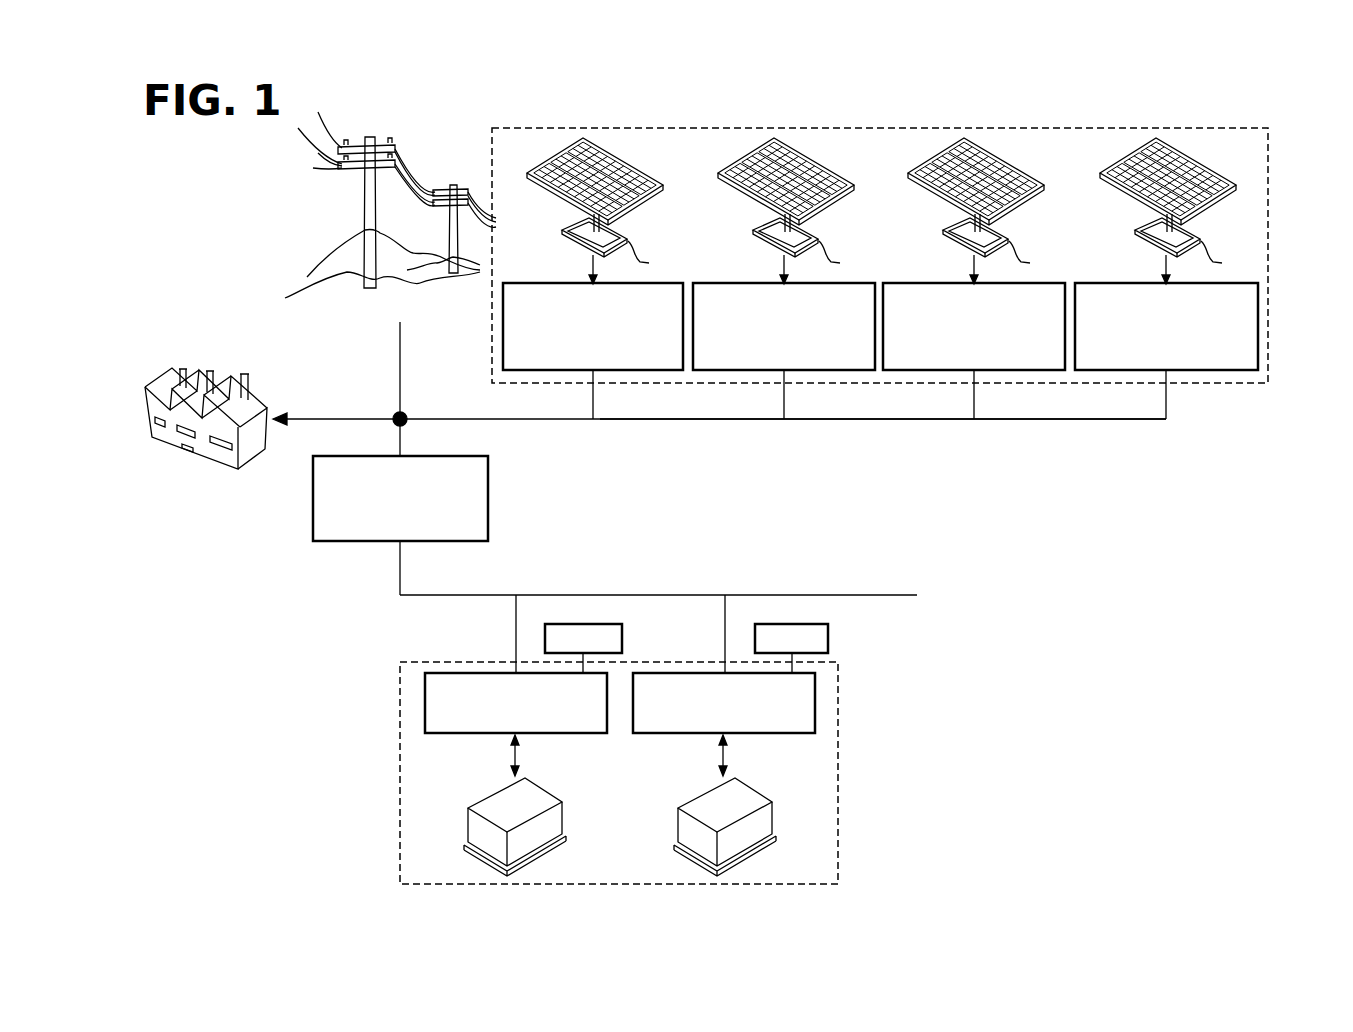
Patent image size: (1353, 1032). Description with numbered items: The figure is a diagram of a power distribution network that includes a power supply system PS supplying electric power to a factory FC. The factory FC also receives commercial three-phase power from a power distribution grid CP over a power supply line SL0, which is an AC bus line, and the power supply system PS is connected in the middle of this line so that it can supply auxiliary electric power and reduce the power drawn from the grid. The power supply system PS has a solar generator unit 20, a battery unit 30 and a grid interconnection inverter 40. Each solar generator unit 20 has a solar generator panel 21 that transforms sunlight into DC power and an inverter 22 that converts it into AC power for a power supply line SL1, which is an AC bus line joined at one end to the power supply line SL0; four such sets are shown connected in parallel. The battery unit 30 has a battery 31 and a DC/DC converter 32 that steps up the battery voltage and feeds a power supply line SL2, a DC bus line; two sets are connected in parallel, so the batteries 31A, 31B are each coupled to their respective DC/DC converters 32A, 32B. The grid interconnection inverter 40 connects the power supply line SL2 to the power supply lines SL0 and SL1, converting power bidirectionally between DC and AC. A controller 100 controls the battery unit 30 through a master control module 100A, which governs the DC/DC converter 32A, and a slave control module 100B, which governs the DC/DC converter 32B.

The solar generator unit 20 is at (890, 128).
The solar generator panel 21 is at (1234, 161).
The inverter 22 is at (1251, 264).
The battery unit 30 is at (838, 700).
The battery 31 is at (711, 827).
The battery 31A is at (563, 813).
The battery 31B is at (770, 817).
The DC/DC converter 32 is at (630, 728).
The DC/DC converter 32A is at (563, 737).
The DC/DC converter 32B is at (775, 735).
The grid interconnection inverter 40 is at (488, 497).
The controller 100 is at (686, 577).
The master control module 100A is at (592, 624).
The slave control module 100B is at (790, 624).
The power distribution grid CP is at (423, 165).
The factory FC is at (175, 447).
The power supply line SL0 is at (399, 363).
The power supply line SL1 is at (892, 420).
The power supply line SL2 is at (853, 595).
The power supply system PS is at (1160, 527).